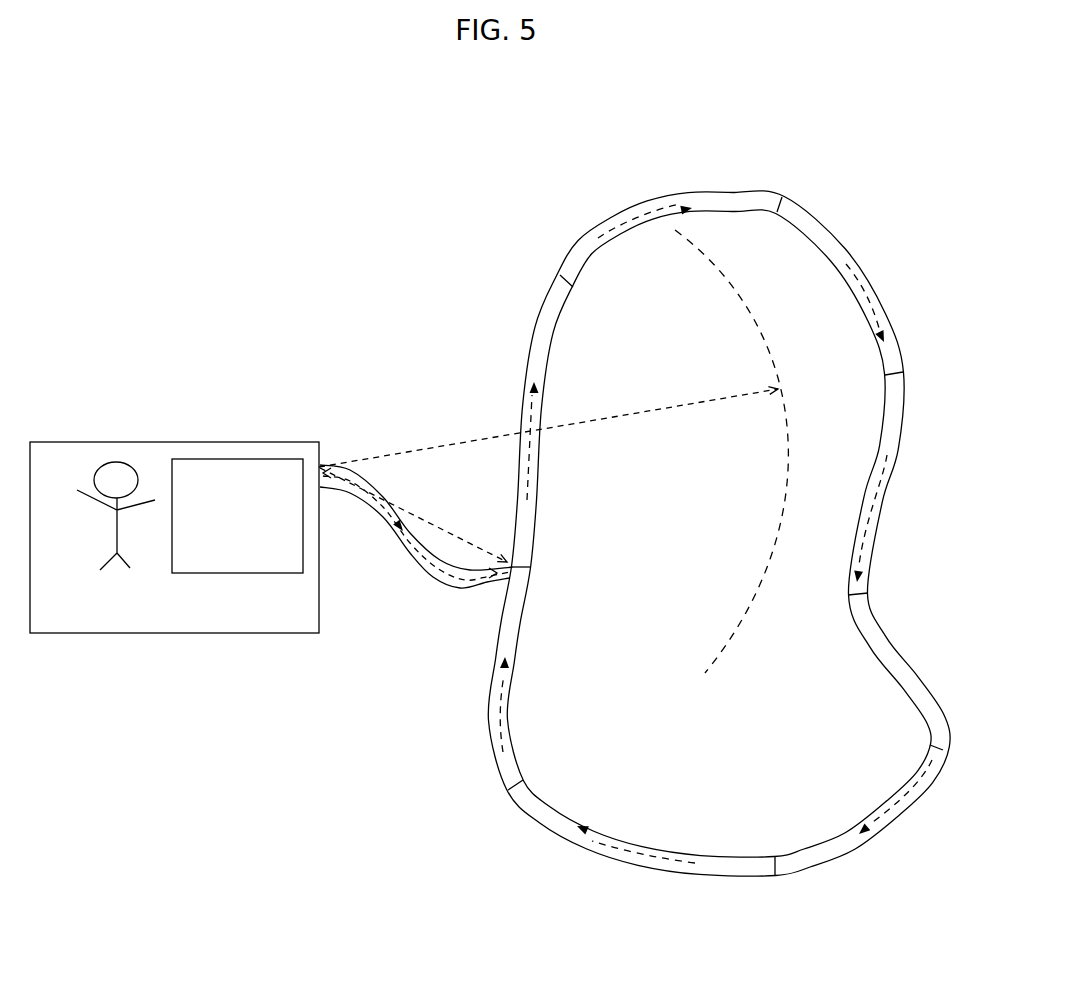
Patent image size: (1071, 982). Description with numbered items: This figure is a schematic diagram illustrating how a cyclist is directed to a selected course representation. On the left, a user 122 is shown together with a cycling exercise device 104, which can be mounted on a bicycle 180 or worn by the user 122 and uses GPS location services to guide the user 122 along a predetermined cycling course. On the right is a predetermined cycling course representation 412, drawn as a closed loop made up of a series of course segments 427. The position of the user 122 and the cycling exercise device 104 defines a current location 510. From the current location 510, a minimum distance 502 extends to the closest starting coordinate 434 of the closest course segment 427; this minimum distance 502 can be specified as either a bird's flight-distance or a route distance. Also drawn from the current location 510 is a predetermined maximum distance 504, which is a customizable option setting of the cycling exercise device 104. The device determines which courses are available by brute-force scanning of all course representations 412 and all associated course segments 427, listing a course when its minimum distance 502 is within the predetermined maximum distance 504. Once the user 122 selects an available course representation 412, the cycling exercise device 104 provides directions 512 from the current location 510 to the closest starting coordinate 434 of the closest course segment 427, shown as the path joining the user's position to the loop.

The predetermined cycling course representation 412 is at (570, 207).
The course segment 427 is at (533, 332).
The closest starting coordinate 434 is at (535, 563).
The predetermined maximum distance 504 is at (442, 447).
The minimum distance 502 is at (440, 522).
The current location 510 is at (320, 460).
The directions 512 is at (440, 573).
The cycling exercise device 104 is at (263, 458).
The user 122 is at (108, 519).
The bicycle 180 is at (190, 636).